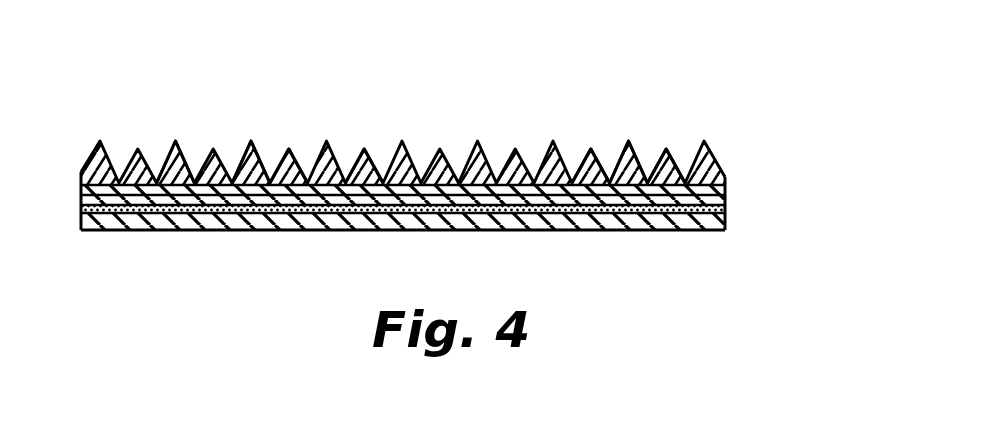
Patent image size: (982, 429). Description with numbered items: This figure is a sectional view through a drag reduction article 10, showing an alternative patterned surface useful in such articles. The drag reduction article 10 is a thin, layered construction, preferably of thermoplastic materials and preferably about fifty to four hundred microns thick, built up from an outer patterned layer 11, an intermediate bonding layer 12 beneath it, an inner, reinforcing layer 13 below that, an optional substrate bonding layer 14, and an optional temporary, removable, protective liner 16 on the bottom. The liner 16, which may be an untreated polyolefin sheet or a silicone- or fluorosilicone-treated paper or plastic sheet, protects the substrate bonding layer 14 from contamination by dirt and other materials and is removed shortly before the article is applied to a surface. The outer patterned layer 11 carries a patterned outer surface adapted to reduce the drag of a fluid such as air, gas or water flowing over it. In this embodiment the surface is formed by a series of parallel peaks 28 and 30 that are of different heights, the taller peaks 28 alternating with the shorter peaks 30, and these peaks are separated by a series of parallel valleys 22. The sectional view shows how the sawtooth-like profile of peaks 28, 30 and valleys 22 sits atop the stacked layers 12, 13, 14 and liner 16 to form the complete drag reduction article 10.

The drag reduction article 10 is at (753, 77).
The outer patterned layer 11 is at (723, 162).
The intermediate bonding layer 12 is at (727, 190).
The inner, reinforcing layer 13 is at (725, 202).
The substrate bonding layer 14 is at (78, 213).
The temporary, removable, protective liner 16 is at (512, 228).
The valleys 22 is at (572, 165).
The peaks 28 is at (173, 144).
The peaks 30 is at (290, 147).